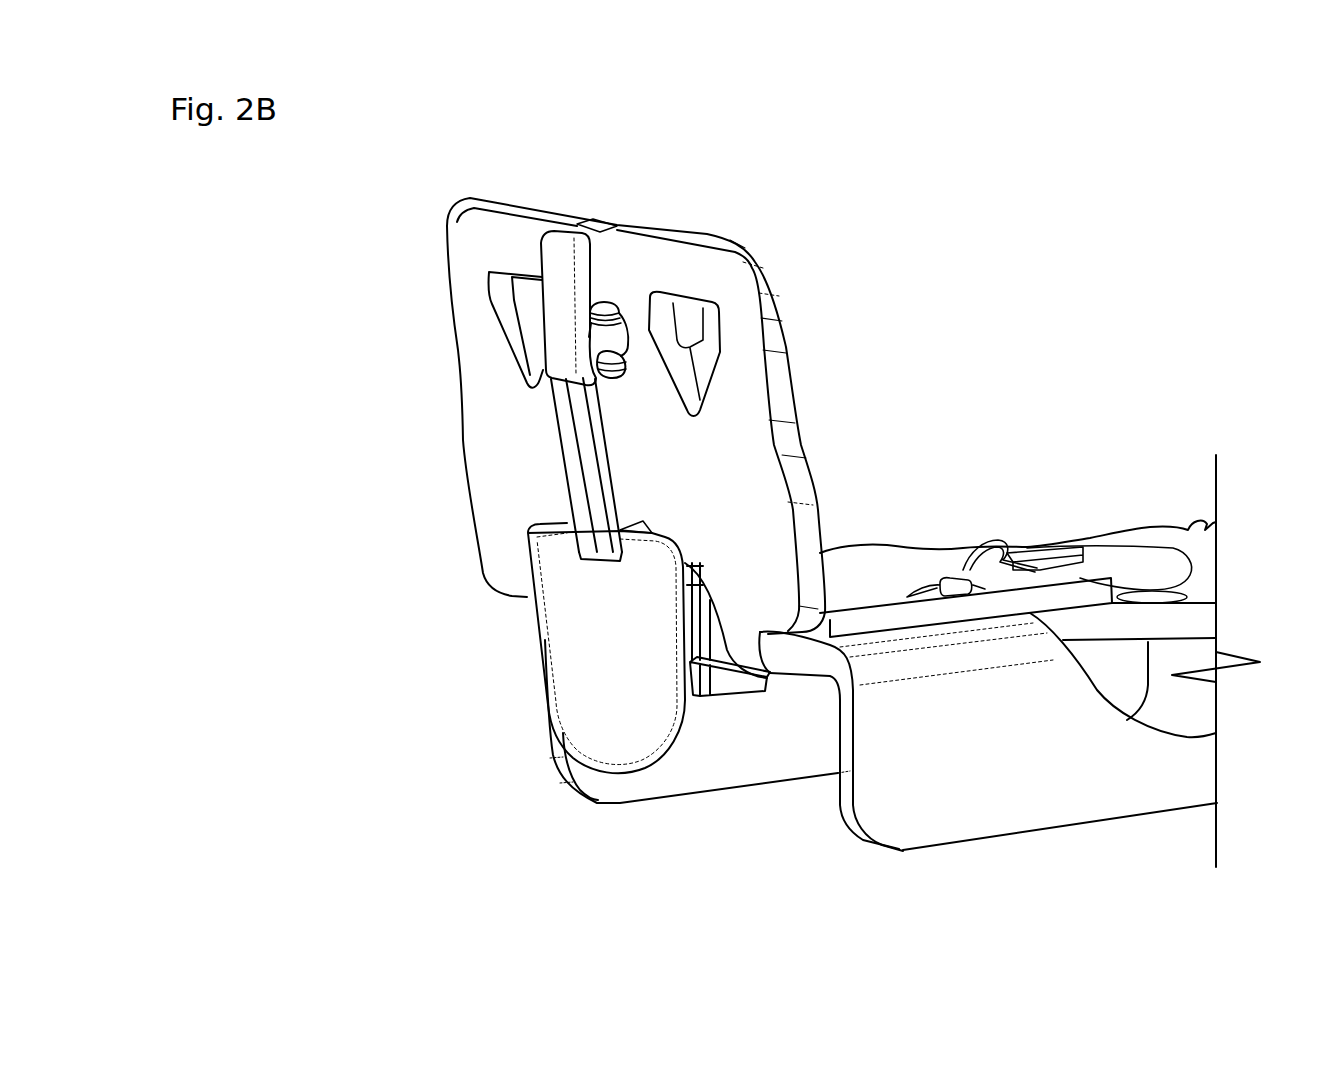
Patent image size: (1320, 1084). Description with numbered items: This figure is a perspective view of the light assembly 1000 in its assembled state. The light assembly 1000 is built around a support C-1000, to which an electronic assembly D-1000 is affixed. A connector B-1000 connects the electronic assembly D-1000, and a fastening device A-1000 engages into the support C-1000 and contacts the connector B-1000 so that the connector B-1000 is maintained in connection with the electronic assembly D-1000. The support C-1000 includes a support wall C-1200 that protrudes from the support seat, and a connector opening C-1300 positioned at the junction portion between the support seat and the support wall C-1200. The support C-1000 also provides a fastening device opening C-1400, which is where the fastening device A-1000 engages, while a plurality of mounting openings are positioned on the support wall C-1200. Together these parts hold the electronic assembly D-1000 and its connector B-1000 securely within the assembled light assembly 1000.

The light assembly 1000 is at (873, 313).
The fastening device A-1000 is at (508, 641).
The connector B-1000 is at (724, 736).
The support C-1000 is at (402, 389).
The support wall C-1200 is at (447, 333).
The connector opening C-1300 is at (713, 612).
The fastening device opening C-1400 is at (604, 306).
The electronic assembly D-1000 is at (937, 514).